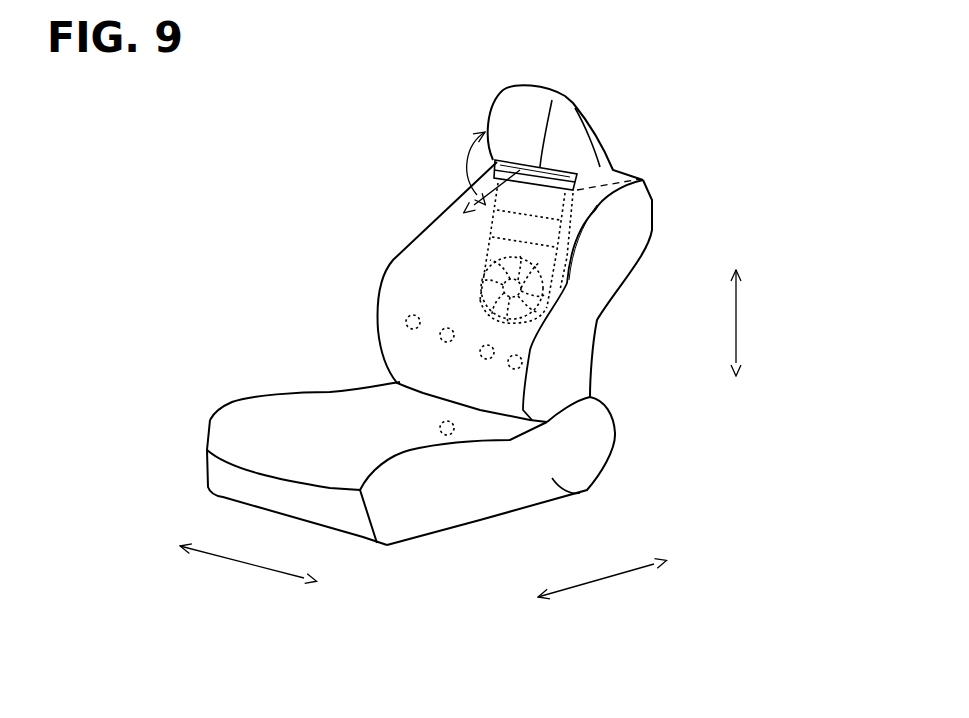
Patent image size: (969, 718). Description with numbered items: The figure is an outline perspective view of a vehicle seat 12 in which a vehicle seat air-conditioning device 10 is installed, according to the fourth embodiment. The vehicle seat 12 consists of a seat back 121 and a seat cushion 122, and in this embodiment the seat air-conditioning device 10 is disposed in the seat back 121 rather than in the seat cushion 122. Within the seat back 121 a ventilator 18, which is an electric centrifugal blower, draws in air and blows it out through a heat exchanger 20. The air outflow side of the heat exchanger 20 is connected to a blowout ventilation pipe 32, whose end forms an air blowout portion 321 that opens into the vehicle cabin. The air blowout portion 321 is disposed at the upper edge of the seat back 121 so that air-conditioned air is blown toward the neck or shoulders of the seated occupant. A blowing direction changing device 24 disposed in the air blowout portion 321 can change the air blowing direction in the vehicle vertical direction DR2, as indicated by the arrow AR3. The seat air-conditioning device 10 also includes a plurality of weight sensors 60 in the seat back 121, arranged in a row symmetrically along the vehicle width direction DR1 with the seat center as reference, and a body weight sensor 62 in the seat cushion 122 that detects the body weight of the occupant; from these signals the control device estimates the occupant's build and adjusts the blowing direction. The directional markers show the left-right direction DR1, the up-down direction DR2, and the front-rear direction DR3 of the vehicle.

The vehicle seat air-conditioning device 10 is at (482, 230).
The vehicle seat 12 is at (706, 128).
The ventilator 18 is at (537, 323).
The heat exchanger 20 is at (570, 217).
The blowing direction changing device 24 is at (542, 170).
The blowout ventilation pipe 32 is at (643, 180).
The weight sensors 60 is at (410, 312).
The body weight sensor 62 is at (450, 436).
The seat back 121 is at (633, 212).
The seat cushion 122 is at (587, 492).
The air blowout portion 321 is at (570, 168).
The arrow AR3 is at (465, 151).
The left-right direction DR1 is at (218, 557).
The up-down direction DR2 is at (740, 318).
The front-rear direction DR3 is at (603, 575).